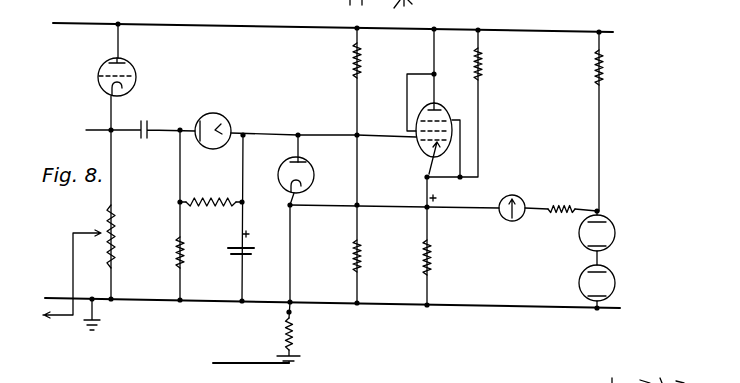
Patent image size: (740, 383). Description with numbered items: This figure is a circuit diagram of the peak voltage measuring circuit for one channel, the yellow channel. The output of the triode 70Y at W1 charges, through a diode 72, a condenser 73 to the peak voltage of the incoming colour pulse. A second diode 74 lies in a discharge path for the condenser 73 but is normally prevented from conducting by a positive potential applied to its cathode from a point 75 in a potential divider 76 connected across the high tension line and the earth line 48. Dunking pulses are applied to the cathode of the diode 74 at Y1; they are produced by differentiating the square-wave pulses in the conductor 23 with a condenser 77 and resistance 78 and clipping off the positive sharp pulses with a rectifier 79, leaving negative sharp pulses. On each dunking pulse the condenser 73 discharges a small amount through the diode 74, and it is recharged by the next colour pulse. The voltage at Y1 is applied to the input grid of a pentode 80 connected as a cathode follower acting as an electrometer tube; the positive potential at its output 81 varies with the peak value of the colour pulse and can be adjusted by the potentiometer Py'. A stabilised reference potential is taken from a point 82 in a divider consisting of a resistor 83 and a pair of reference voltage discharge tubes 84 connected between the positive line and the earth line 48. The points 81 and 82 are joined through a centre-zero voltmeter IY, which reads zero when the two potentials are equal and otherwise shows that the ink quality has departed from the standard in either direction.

The triode 70Y is at (98, 76).
The output of the triode W1 is at (128, 129).
The diode 72 is at (211, 112).
The condenser 73 is at (232, 258).
The potentiometer Py' is at (91, 261).
The earth line 48 is at (131, 294).
The point at cathode of second diode Y1 is at (299, 129).
The second diode 74 is at (309, 166).
The point in potential divider 75 is at (361, 206).
The potential divider 76 is at (354, 50).
The condenser 77 is at (294, 357).
The resistance 78 is at (292, 345).
The rectifier 79 is at (292, 313).
The pentode 80 is at (453, 113).
The output point 81 is at (422, 210).
The point in potential divider 82 is at (590, 214).
The resistor 83 is at (595, 69).
The reference voltage discharge tubes 84 is at (580, 274).
The centre-zero voltmeter IY is at (511, 194).
The conductor 23 is at (243, 352).